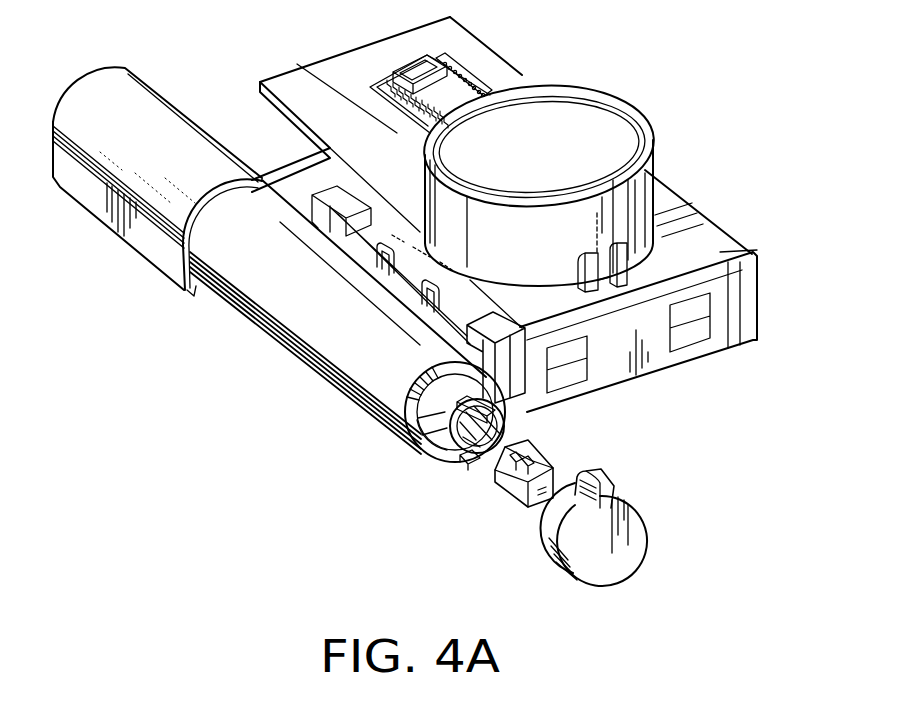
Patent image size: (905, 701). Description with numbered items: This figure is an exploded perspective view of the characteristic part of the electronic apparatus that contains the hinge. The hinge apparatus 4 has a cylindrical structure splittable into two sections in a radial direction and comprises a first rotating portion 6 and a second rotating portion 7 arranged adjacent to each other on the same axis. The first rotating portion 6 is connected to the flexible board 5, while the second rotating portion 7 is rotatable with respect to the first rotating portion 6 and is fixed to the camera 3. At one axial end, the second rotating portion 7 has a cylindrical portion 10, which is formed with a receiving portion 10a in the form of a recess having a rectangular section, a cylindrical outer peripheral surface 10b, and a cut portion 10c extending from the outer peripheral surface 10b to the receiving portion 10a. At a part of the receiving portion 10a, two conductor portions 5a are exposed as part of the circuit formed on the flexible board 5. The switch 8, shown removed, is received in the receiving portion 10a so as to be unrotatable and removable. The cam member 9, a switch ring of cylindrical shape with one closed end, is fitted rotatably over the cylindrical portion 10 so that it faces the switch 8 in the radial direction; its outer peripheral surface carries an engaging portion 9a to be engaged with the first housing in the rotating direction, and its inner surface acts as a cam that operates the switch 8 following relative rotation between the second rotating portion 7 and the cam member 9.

The camera 3 is at (622, 138).
The hinge apparatus 4 is at (358, 422).
The flexible board 5 is at (485, 68).
The conductor portions 5a is at (467, 468).
The first rotating portion 6 is at (125, 177).
The second rotating portion 7 is at (338, 349).
The switch 8 is at (513, 482).
The cam member 9 is at (595, 512).
The engaging portion 9a is at (605, 475).
The cylindrical portion 10 is at (494, 450).
The receiving portion 10a is at (490, 432).
The outer peripheral surface 10b is at (423, 447).
The cut portion 10c is at (527, 408).